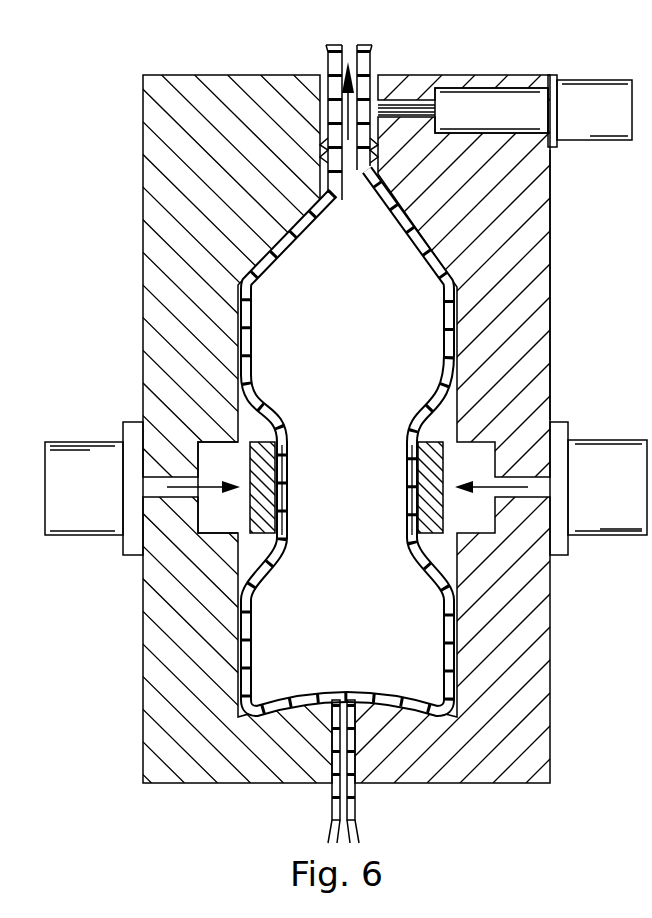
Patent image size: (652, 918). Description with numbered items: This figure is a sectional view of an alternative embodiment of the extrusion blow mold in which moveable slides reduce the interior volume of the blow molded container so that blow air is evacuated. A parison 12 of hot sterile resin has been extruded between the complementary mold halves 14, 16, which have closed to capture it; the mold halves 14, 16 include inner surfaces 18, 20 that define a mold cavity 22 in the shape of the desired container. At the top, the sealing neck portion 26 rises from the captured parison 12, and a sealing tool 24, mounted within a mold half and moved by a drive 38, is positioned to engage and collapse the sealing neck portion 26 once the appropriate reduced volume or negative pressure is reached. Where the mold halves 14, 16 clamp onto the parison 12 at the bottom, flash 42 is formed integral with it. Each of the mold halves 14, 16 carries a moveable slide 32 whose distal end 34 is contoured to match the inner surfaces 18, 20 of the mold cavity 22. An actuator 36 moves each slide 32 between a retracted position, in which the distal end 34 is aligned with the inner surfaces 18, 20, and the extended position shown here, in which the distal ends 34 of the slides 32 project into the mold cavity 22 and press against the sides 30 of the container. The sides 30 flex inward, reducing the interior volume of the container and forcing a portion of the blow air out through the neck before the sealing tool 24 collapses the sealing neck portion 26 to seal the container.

The parison 12 is at (328, 62).
The mold half 14 is at (150, 137).
The mold half 16 is at (553, 245).
The inner surface 18 is at (245, 437).
The inner surface 20 is at (452, 438).
The mold cavity 22 is at (358, 320).
The sealing tool 24 is at (386, 105).
The sealing neck portion 26 is at (325, 103).
The sides of the container 30 is at (285, 517).
The moveable slide 32 is at (158, 490).
The distal end 34 is at (268, 455).
The actuator 36 is at (60, 525).
The drive 38 is at (575, 100).
The flash 42 is at (333, 813).